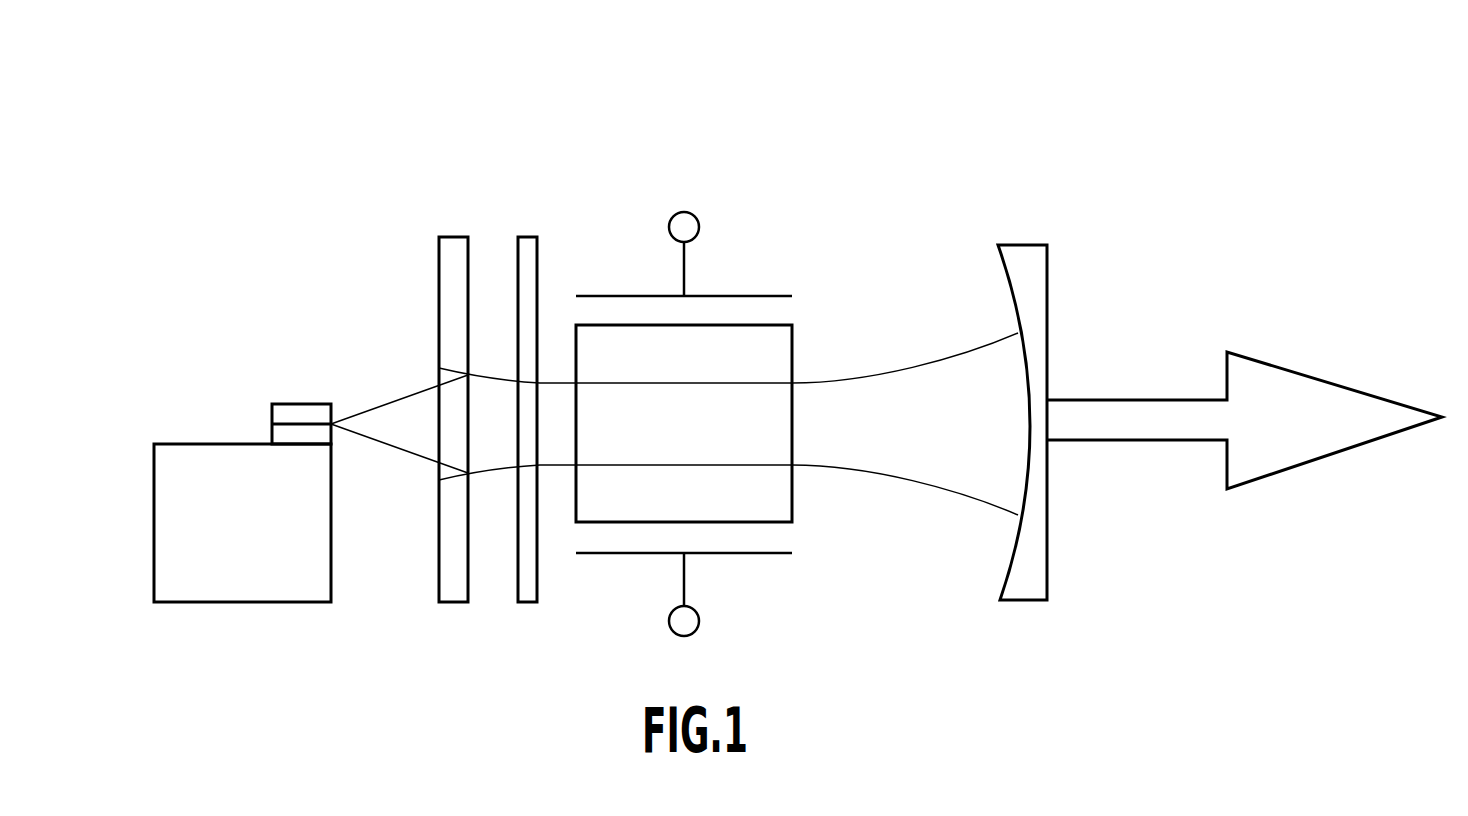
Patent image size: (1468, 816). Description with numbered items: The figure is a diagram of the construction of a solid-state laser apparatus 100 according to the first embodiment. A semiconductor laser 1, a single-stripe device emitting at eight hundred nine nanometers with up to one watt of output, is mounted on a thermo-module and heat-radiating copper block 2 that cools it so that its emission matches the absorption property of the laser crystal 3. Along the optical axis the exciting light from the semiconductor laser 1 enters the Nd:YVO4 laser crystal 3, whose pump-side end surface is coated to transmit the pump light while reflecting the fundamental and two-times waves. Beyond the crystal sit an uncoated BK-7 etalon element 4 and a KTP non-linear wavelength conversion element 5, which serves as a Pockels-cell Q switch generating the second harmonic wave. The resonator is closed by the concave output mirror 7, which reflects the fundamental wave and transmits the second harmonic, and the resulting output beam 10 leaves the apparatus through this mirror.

The laser apparatus 100 is at (603, 132).
The semiconductor laser 1 is at (299, 404).
The thermo-module/heat-radiating copper block 2 is at (250, 603).
The laser crystal 3 is at (455, 602).
The etalon element 4 is at (528, 602).
The non-linear wavelength conversion element 5 is at (765, 553).
The output mirror 7 is at (1030, 600).
The output laser beam 10 is at (1117, 441).